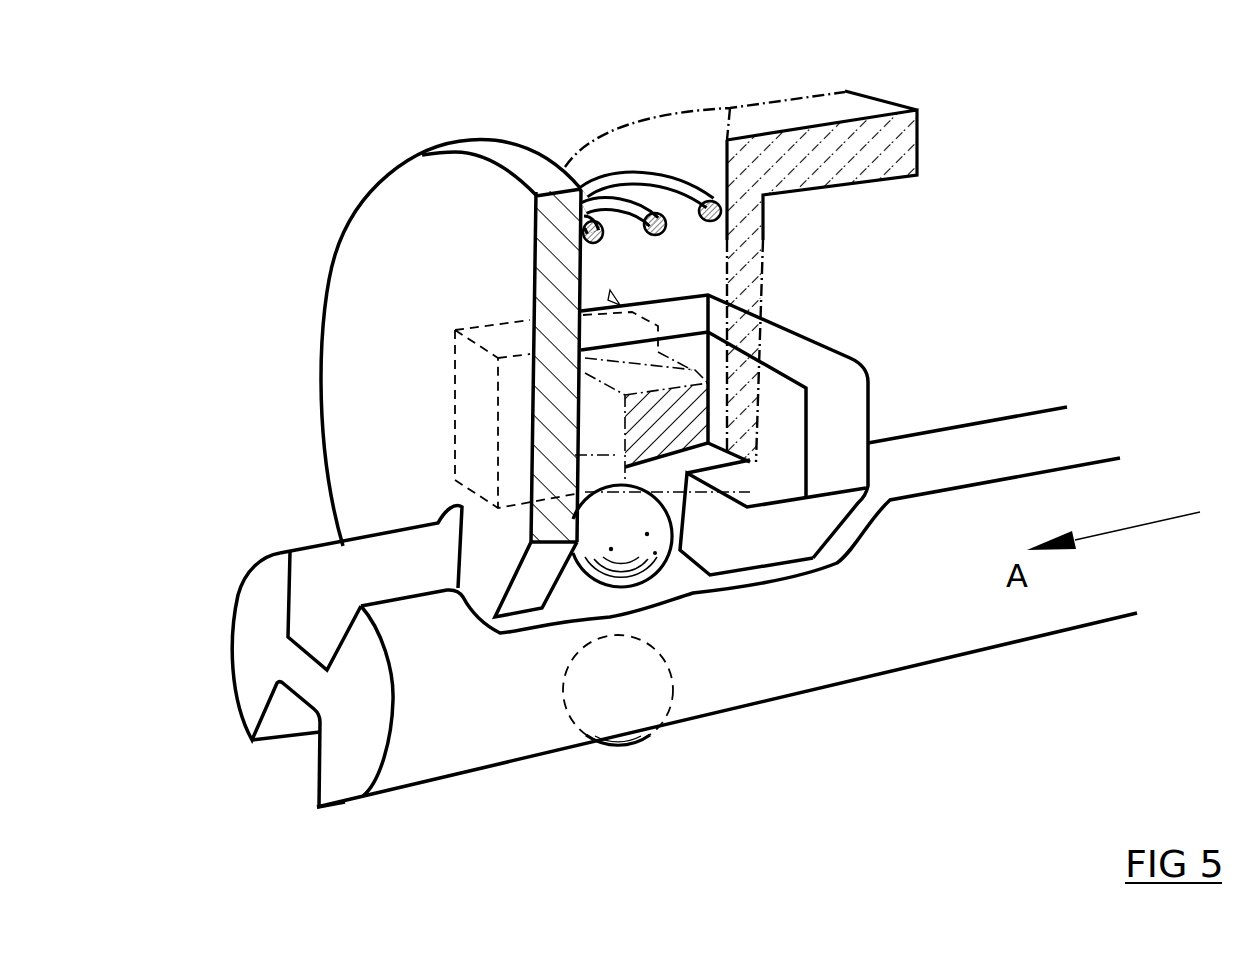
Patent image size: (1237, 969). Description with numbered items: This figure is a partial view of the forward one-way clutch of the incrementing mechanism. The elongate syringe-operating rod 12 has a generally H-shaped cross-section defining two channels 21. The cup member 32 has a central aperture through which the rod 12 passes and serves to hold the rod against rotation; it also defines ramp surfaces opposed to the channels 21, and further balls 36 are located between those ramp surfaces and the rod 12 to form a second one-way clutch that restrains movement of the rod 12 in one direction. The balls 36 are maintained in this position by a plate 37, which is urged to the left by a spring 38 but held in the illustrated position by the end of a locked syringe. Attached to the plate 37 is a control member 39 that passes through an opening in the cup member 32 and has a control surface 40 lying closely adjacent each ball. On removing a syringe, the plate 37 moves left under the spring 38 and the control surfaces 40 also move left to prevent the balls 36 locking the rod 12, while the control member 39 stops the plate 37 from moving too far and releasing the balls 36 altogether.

The syringe-operating rod 12 is at (487, 743).
The channels 21 is at (320, 578).
The cup member 32 is at (850, 90).
The balls 36 is at (660, 563).
The plate 37 is at (377, 207).
The spring 38 is at (605, 193).
The control member 39 is at (847, 408).
The control surface 40 is at (707, 533).